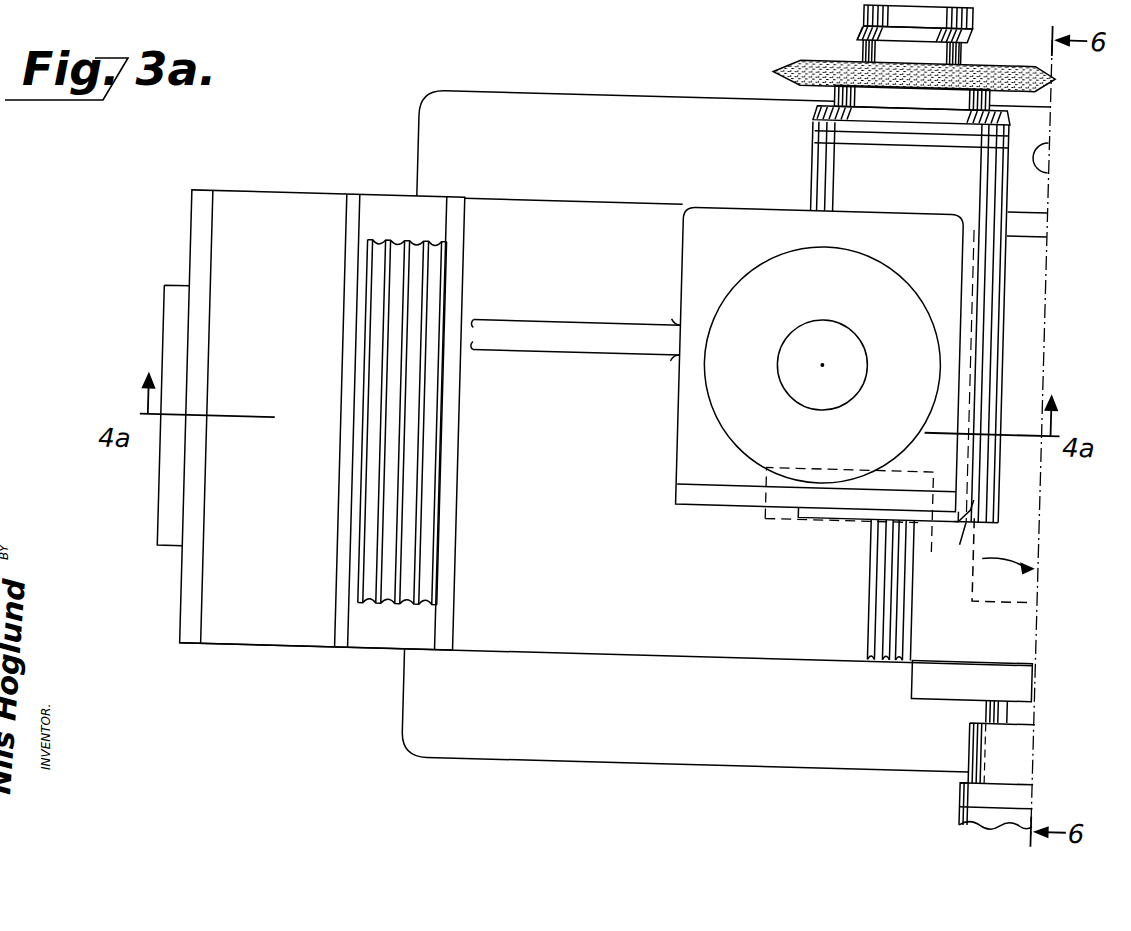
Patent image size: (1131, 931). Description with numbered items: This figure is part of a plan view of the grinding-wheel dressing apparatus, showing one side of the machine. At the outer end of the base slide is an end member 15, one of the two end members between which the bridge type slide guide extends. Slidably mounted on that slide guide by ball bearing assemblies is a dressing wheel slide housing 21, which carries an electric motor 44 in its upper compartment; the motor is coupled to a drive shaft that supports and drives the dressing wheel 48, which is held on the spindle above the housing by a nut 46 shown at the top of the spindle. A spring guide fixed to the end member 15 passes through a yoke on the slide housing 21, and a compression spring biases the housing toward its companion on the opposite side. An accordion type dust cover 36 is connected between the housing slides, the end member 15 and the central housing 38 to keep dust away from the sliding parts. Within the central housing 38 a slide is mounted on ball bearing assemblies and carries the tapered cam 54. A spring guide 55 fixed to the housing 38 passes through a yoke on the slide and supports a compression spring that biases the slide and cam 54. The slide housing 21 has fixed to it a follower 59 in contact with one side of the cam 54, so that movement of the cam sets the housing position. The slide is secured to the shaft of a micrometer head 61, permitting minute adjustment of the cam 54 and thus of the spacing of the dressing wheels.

The end member 15 is at (278, 214).
The dressing wheel slide housing 21 is at (480, 215).
The accordion type dust cover 36 is at (394, 598).
The central housing 38 is at (960, 643).
The electric motor 44 is at (758, 268).
The spindle nut 46 is at (860, 12).
The dressing wheel 48 is at (786, 57).
The tapered cam 54 is at (998, 595).
The spring guide 55 is at (900, 648).
The follower 59 is at (936, 521).
The micrometer head 61 is at (977, 781).